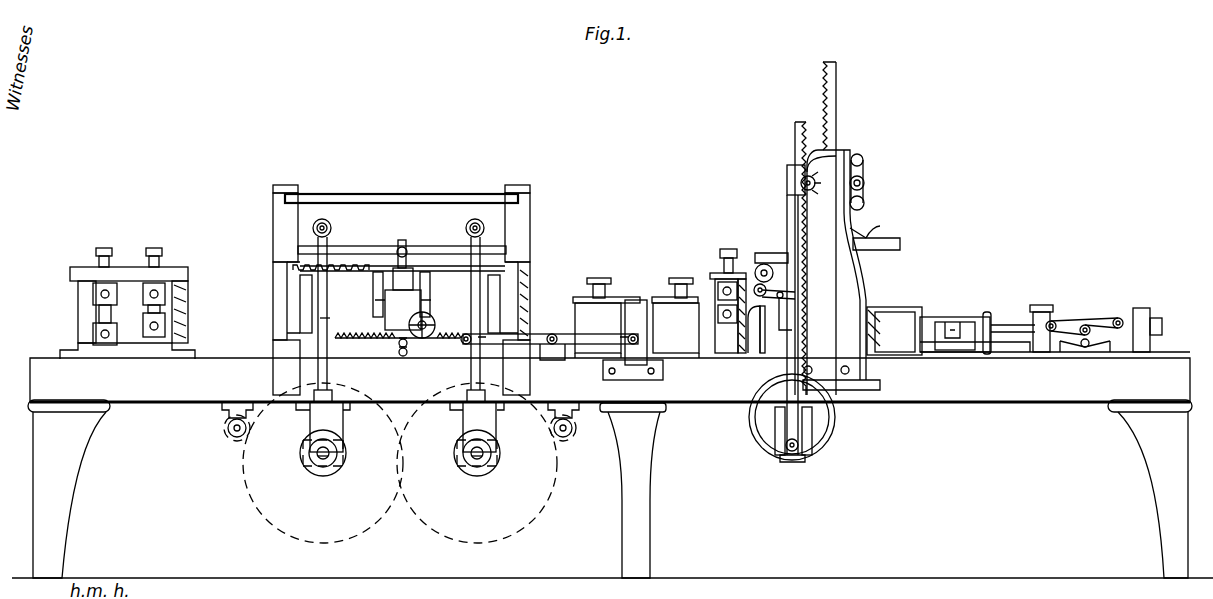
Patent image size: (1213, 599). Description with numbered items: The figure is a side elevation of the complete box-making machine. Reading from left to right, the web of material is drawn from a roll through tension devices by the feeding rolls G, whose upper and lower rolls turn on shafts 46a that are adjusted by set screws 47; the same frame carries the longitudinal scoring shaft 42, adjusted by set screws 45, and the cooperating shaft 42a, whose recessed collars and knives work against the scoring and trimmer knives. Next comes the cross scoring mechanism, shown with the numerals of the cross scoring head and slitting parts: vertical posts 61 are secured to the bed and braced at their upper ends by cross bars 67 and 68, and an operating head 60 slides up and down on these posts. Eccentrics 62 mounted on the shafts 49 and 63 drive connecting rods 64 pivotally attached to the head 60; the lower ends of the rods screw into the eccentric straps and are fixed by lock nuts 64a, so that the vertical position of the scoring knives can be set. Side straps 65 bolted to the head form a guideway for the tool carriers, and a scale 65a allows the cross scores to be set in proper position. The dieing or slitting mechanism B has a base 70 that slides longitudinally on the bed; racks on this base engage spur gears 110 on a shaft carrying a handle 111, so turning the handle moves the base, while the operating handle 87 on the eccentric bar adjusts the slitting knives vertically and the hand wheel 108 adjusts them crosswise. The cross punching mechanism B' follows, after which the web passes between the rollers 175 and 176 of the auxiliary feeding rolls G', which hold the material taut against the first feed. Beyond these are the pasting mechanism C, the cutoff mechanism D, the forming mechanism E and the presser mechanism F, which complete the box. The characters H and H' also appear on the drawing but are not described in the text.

The shaft 42 is at (93, 294).
The shaft 42a is at (93, 333).
The set screw 45 is at (98, 252).
The shaft 46a is at (165, 292).
The set screw 47 is at (165, 242).
The shaft 49 is at (318, 460).
The operating head 60 is at (387, 244).
The vertical post 61 is at (273, 270).
The eccentric 62 is at (344, 452).
The shaft 63 is at (474, 460).
The connecting rod 64 is at (323, 318).
The lock nut 64a is at (460, 410).
The side strap 65 is at (402, 260).
The scale 65a is at (340, 262).
The cross bar 67 is at (428, 186).
The cross bar 68 is at (285, 212).
The base 70 is at (376, 334).
The operating handle 87 is at (406, 250).
The hand wheel 108 is at (428, 336).
The spur gear 110 is at (400, 346).
The handle 111 is at (404, 356).
The roller 175 is at (727, 323).
The roller 176 is at (718, 291).
The holder H is at (127, 289).
The holder H' is at (250, 306).
The feeding rolls G is at (182, 252).
The auxiliary feeding rolls G' is at (724, 297).
The dieing mechanism B is at (412, 299).
The dieing mechanism B' is at (545, 267).
The pasting mechanism C is at (549, 334).
The cutoff mechanism D is at (784, 258).
The forming mechanism E is at (875, 235).
The presser mechanism F is at (1055, 321).